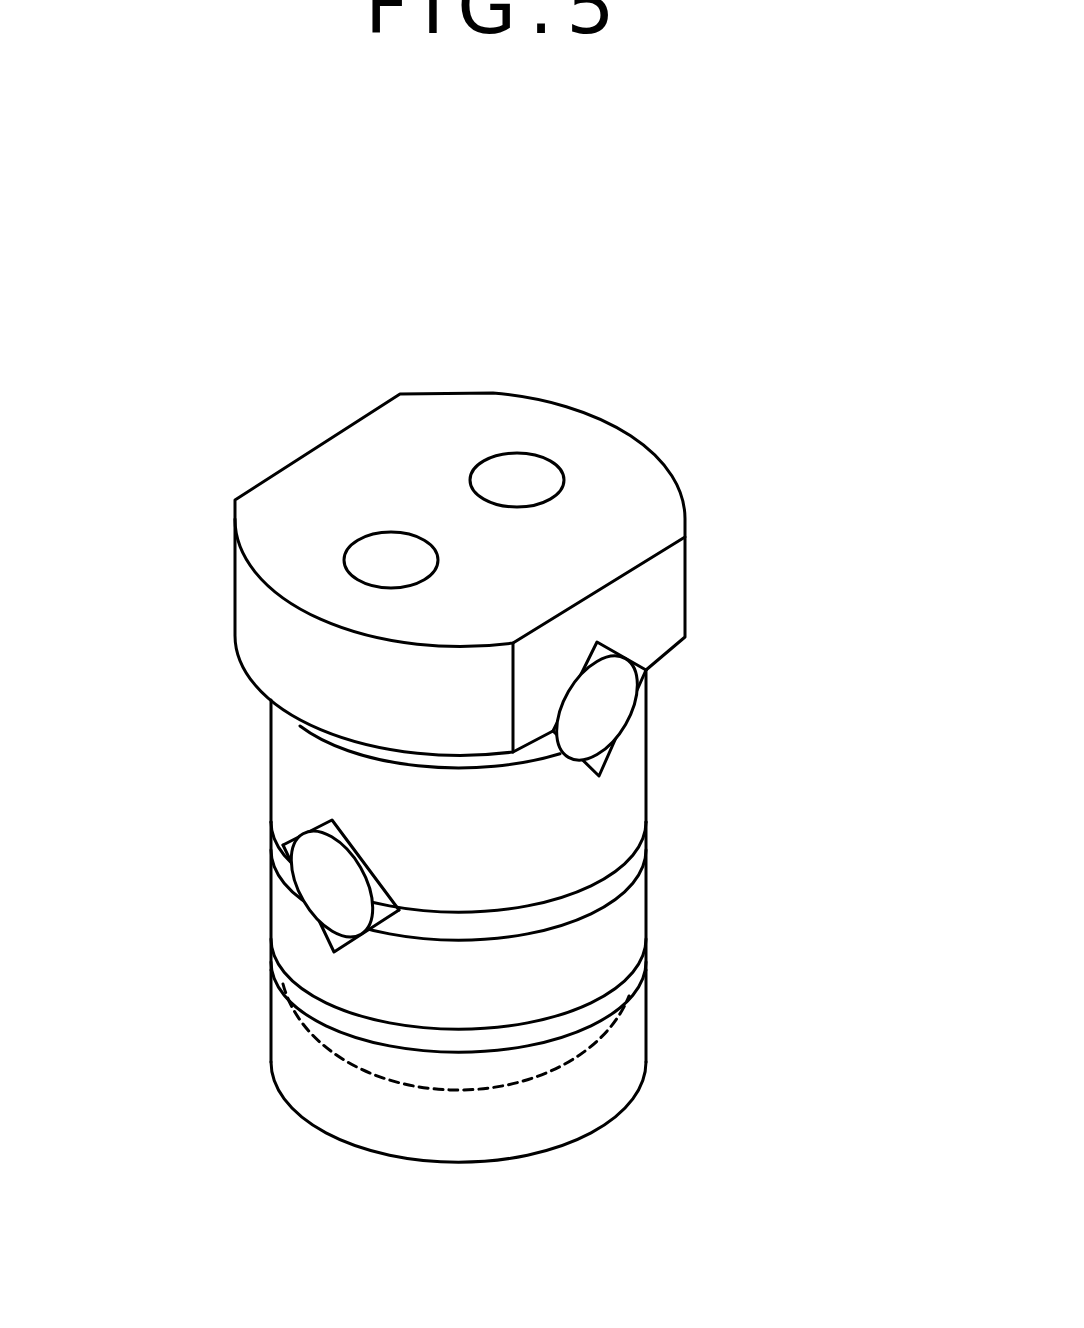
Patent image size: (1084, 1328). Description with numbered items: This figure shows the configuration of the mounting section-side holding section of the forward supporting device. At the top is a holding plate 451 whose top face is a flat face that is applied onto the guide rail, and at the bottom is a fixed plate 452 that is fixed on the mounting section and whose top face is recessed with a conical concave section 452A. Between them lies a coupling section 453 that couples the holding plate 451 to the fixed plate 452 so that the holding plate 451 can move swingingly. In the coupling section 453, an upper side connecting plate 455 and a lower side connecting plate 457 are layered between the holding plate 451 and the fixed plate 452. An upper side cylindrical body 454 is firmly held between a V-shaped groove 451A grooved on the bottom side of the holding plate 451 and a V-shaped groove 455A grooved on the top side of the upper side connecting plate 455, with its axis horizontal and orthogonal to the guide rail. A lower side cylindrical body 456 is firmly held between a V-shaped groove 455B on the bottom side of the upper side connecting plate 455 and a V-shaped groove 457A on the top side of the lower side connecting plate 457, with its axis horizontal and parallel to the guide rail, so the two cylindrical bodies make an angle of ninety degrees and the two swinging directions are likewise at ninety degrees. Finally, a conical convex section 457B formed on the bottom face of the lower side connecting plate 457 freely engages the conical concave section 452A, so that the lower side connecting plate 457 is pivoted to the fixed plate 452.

The holding plate 451 is at (640, 487).
The V-shaped groove 451A is at (590, 650).
The fixed plate 452 is at (630, 1040).
The conical concave section 452A is at (540, 1072).
The coupling section 453 is at (775, 811).
The upper side cylindrical body 454 is at (617, 687).
The upper side connecting plate 455 is at (630, 795).
The V-shaped groove 455A is at (600, 777).
The V-shaped groove 455B is at (343, 836).
The lower side cylindrical body 456 is at (310, 870).
The lower side connecting plate 457 is at (630, 907).
The V-shaped groove 457A is at (345, 945).
The conical convex section 457B is at (303, 987).